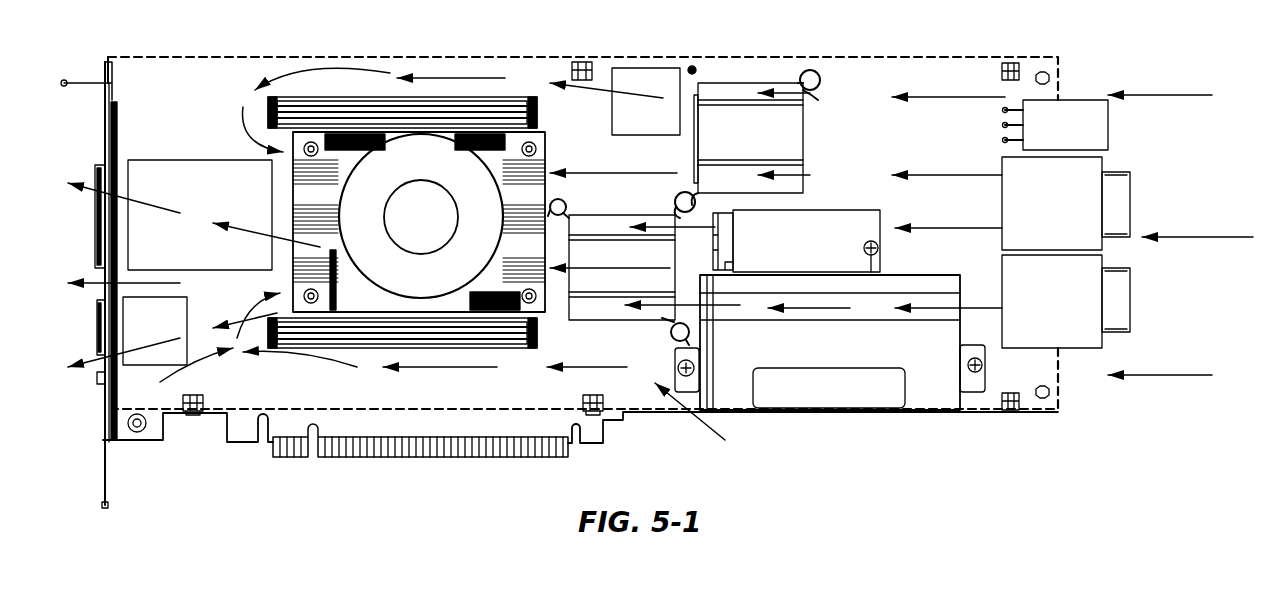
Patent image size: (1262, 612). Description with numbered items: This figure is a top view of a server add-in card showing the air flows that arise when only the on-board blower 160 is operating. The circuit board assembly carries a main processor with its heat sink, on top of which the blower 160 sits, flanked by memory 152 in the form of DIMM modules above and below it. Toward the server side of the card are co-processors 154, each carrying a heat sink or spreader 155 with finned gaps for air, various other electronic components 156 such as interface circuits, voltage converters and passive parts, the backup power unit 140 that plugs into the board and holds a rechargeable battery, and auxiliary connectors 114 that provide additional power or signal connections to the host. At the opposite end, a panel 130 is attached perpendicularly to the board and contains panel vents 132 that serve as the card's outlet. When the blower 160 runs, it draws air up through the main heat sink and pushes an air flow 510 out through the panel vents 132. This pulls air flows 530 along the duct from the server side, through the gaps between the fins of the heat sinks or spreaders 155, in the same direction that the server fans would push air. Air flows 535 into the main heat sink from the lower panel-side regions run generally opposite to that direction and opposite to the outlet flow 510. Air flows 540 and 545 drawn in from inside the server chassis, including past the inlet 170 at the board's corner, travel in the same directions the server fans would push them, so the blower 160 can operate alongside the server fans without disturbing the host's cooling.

The auxiliary connector 114 is at (1082, 138).
The panel 130 is at (103, 458).
The panel vents 132 is at (93, 163).
The backup power unit 140 is at (845, 397).
The memory 152 is at (378, 97).
The co-processor 154 is at (767, 155).
The heat sink or spreader 155 is at (782, 112).
The electronic components 156 is at (217, 200).
The blower 160 is at (438, 230).
The inlet 170 is at (1082, 383).
The air flow 510 is at (92, 190).
The air flows 530 is at (848, 100).
The air flows 535 is at (277, 198).
The air flows 540 is at (1150, 98).
The air flow 545 is at (700, 428).